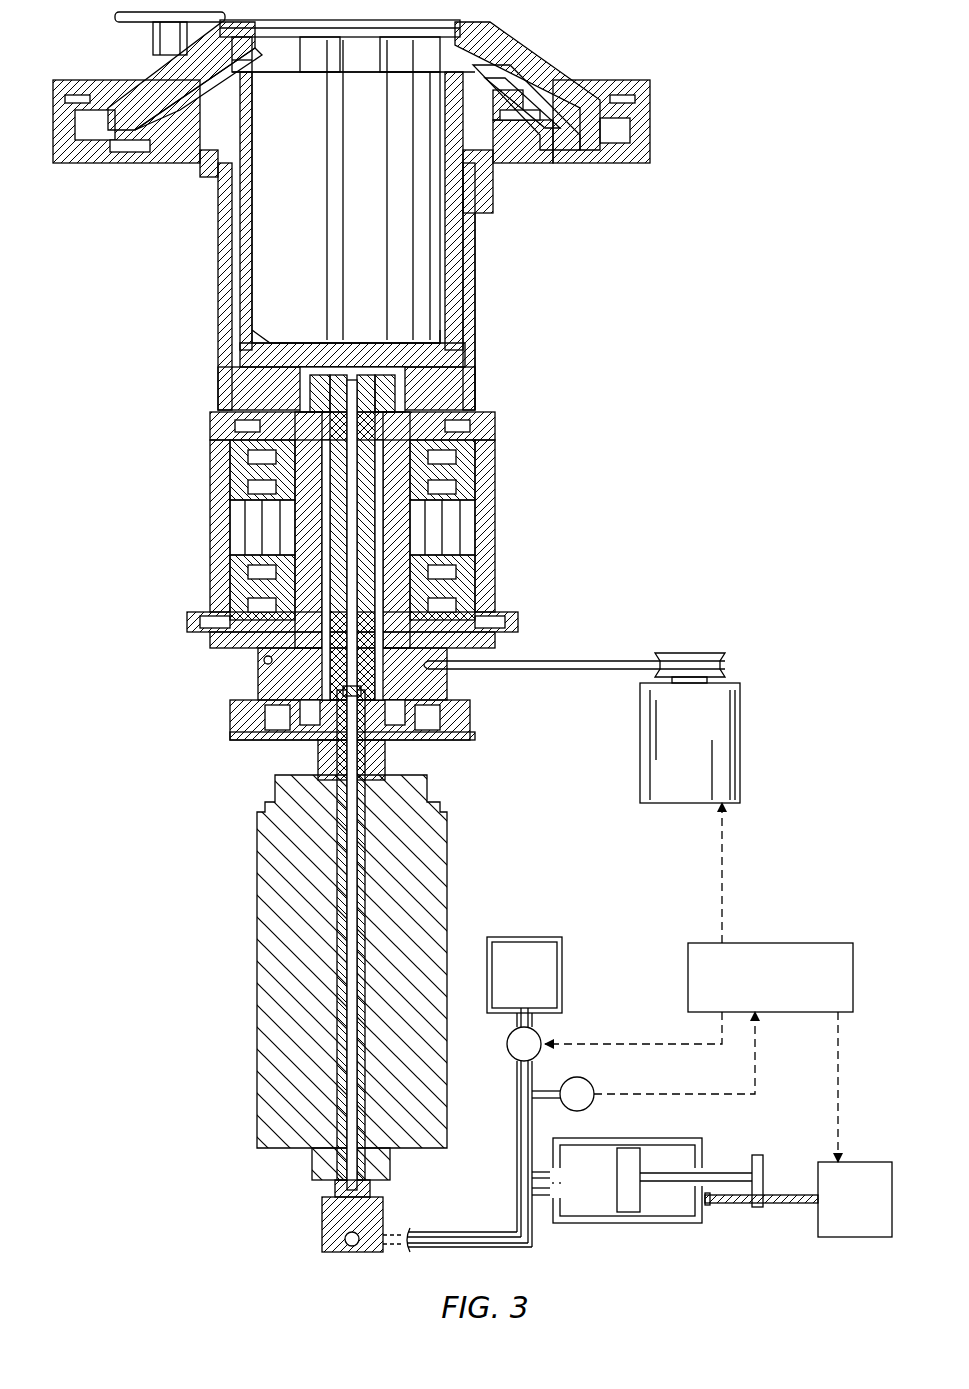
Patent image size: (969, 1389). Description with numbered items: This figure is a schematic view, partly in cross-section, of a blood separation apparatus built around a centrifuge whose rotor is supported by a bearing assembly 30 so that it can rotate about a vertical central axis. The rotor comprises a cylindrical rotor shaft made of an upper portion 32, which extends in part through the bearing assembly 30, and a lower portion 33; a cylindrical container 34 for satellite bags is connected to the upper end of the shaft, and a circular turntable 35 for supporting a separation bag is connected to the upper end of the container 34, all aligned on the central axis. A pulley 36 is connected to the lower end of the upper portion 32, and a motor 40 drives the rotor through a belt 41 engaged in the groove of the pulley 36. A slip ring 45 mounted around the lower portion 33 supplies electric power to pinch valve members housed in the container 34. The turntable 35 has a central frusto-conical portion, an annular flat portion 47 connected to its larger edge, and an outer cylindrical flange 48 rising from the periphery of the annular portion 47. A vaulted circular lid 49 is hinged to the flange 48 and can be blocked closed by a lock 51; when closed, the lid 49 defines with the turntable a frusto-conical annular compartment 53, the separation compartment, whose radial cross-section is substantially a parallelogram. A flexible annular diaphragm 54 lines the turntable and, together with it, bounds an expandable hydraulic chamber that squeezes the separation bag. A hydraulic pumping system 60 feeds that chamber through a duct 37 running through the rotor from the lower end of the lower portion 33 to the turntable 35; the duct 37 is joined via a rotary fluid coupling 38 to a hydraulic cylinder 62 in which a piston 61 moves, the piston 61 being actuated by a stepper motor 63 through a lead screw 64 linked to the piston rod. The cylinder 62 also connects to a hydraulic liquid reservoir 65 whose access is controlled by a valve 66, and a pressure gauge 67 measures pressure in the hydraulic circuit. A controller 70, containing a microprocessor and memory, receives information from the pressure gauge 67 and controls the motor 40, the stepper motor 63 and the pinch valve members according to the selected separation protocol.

The bearing assembly 30 is at (362, 529).
The upper portion of rotor shaft 32 is at (333, 505).
The lower portion of rotor shaft 33 is at (329, 960).
The cylindrical container 34 is at (470, 312).
The turntable 35 is at (401, 147).
The pulley 36 is at (257, 688).
The duct 37 is at (347, 975).
The rotary fluid coupling 38 is at (330, 1212).
The motor 40 is at (648, 728).
The belt 41 is at (575, 660).
The slip ring 45 is at (290, 912).
The annular flat portion 47 is at (605, 155).
The outer cylindrical flange 48 is at (540, 120).
The vaulted circular lid 49 is at (515, 58).
The lock 51 is at (158, 30).
The frusto-conical annular compartment 53 is at (555, 105).
The flexible annular diaphragm 54 is at (160, 85).
The hydraulic pumping system 60 is at (637, 1077).
The piston 61 is at (630, 1160).
The hydraulic cylinder 62 is at (656, 1164).
The stepper motor 63 is at (860, 1170).
The lead screw 64 is at (800, 1198).
The hydraulic liquid reservoir 65 is at (528, 948).
The valve 66 is at (540, 1035).
The pressure gauge 67 is at (592, 1090).
The controller 70 is at (695, 945).